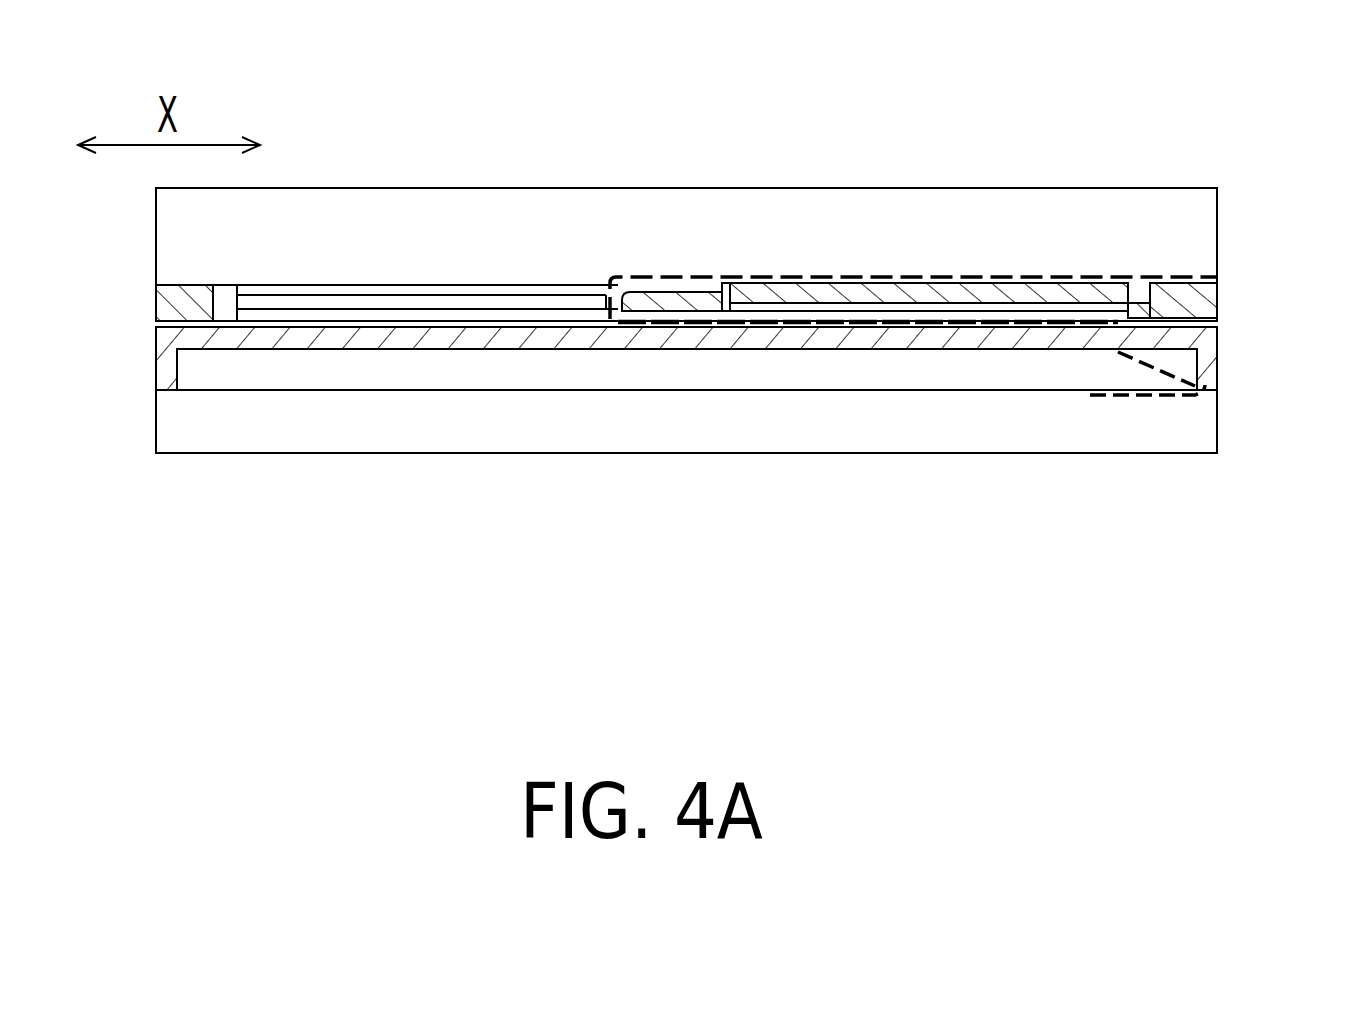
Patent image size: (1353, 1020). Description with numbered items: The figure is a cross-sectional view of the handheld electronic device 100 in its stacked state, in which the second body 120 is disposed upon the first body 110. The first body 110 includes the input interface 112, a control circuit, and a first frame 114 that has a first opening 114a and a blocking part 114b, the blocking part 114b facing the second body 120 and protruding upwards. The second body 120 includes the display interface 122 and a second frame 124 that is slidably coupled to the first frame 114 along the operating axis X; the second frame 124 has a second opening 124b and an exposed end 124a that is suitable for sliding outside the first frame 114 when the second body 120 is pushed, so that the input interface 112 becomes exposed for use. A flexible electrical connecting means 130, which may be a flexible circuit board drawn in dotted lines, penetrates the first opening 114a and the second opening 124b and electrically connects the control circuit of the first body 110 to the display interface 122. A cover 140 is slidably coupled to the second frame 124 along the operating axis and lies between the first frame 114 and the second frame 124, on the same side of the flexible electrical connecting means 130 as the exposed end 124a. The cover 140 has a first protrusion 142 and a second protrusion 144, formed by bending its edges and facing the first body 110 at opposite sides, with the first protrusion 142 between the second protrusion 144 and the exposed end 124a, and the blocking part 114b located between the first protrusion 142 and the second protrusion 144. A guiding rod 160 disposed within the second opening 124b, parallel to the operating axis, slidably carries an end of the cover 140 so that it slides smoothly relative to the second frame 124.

The handheld electronic device 100 is at (1328, 692).
The first body 110 is at (134, 327).
The input interface 112 is at (340, 432).
The first frame 114 is at (290, 346).
The first opening 114a is at (1076, 348).
The blocking part 114b is at (1105, 346).
The second body 120 is at (1247, 187).
The display interface 122 is at (868, 222).
The second frame 124 is at (978, 283).
The exposed end 124a is at (1215, 388).
The second opening 124b is at (340, 280).
The flexible electrical connecting means 130 is at (760, 275).
The cover 140 is at (699, 290).
The first protrusion 142 is at (1134, 300).
The second protrusion 144 is at (627, 326).
The guiding rod 160 is at (432, 303).